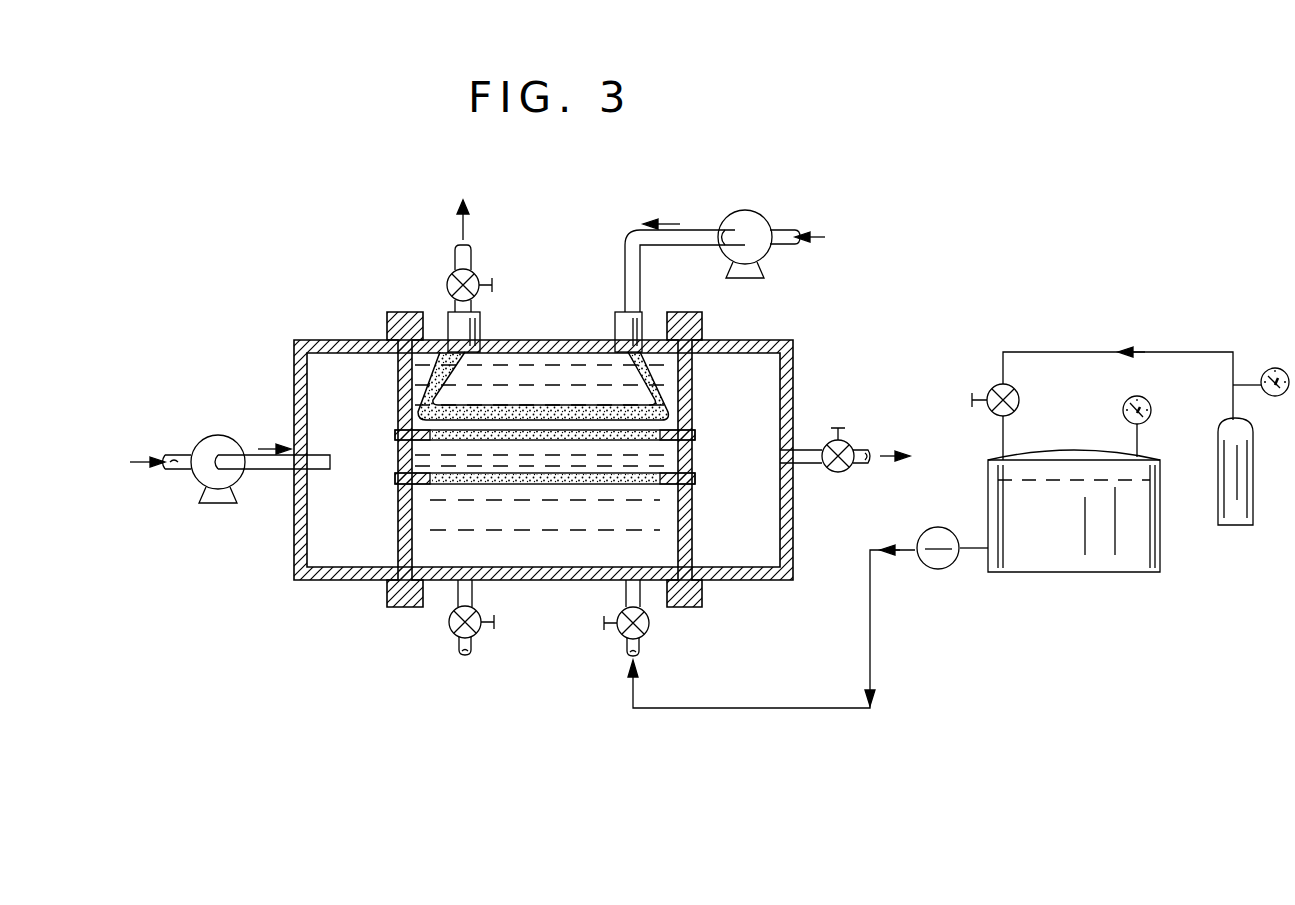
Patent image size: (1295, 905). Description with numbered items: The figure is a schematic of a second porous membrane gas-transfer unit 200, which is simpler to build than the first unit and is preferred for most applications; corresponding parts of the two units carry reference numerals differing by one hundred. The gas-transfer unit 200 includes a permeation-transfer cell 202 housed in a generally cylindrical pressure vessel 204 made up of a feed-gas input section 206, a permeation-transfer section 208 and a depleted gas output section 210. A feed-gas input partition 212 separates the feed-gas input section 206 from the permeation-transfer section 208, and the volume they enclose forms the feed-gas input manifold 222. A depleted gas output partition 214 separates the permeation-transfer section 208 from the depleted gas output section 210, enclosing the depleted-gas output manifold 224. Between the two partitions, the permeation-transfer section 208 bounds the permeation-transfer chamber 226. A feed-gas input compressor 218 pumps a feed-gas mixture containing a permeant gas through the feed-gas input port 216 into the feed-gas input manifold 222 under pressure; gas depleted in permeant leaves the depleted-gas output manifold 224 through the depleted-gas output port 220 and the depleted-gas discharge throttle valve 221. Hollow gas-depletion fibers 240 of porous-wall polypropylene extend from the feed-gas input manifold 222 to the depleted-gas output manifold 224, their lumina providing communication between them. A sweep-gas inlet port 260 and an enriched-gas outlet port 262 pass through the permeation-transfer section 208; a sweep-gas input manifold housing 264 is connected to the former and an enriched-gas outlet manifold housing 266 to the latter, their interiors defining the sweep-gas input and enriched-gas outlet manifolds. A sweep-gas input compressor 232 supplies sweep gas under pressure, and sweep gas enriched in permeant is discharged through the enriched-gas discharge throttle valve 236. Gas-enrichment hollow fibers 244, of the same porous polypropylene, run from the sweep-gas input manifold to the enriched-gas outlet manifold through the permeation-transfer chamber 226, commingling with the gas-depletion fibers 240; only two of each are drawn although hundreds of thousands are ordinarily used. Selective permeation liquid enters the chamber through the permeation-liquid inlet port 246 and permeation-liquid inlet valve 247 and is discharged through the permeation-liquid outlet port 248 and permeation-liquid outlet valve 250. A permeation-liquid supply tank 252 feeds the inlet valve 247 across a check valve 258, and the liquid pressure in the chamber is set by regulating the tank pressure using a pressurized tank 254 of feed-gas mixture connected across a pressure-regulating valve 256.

The second gas-transfer unit 200 is at (286, 580).
The permeation-transfer cell 202 is at (343, 586).
The pressure vessel 204 is at (294, 543).
The feed-gas input section 206 is at (342, 340).
The permeation-transfer section 208 is at (563, 345).
The depleted gas output section 210 is at (793, 372).
The feed-gas input partition 212 is at (398, 526).
The depleted gas output partition 214 is at (693, 520).
The feed-gas input port 216 is at (325, 460).
The feed-gas input compressor 218 is at (228, 437).
The depleted-gas output port 220 is at (780, 457).
The depleted-gas discharge throttle valve 221 is at (848, 440).
The feed-gas input manifold 222 is at (362, 404).
The depleted-gas output manifold 224 is at (752, 416).
The permeation-transfer chamber 226 is at (624, 530).
The sweep-gas input compressor 232 is at (760, 215).
The enriched-gas discharge throttle valve 236 is at (478, 274).
The hollow gas-depletion fibers 240 is at (393, 481).
The gas-enrichment hollow fibers 244 is at (548, 403).
The permeation-liquid inlet port 246 is at (626, 572).
The permeation-liquid inlet valve 247 is at (652, 630).
The permeation-liquid outlet port 248 is at (464, 570).
The permeation-liquid outlet valve 250 is at (480, 640).
The permeation-liquid supply tank 252 is at (1162, 555).
The pressurized tank of feed-gas mixture 254 is at (1218, 433).
The pressure-regulating valve 256 is at (1020, 403).
The check valve 258 is at (942, 569).
The sweep-gas inlet port 260 is at (649, 335).
The enriched-gas outlet port 262 is at (440, 352).
The sweep-gas input manifold housing 264 is at (612, 322).
The enriched-gas outlet manifold housing 266 is at (483, 316).